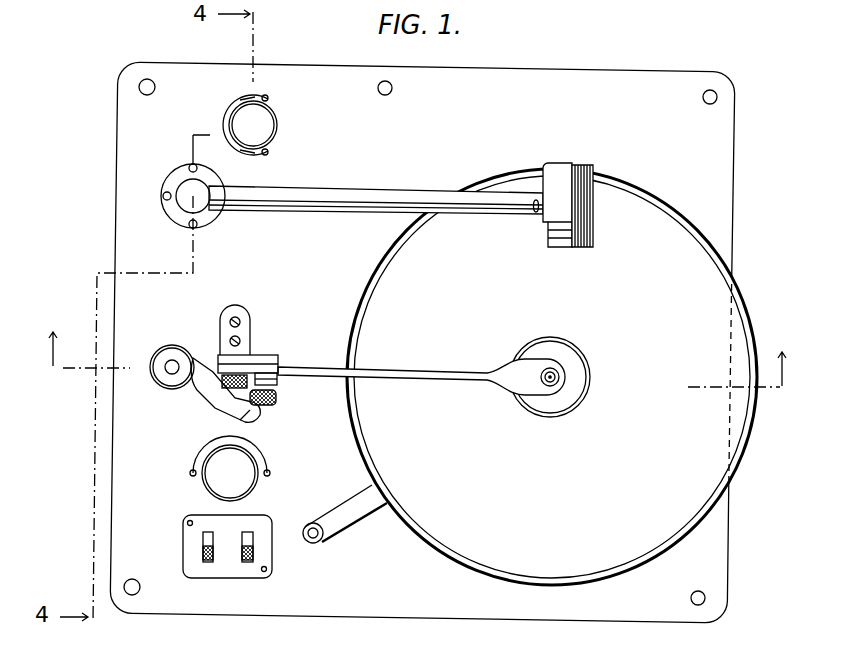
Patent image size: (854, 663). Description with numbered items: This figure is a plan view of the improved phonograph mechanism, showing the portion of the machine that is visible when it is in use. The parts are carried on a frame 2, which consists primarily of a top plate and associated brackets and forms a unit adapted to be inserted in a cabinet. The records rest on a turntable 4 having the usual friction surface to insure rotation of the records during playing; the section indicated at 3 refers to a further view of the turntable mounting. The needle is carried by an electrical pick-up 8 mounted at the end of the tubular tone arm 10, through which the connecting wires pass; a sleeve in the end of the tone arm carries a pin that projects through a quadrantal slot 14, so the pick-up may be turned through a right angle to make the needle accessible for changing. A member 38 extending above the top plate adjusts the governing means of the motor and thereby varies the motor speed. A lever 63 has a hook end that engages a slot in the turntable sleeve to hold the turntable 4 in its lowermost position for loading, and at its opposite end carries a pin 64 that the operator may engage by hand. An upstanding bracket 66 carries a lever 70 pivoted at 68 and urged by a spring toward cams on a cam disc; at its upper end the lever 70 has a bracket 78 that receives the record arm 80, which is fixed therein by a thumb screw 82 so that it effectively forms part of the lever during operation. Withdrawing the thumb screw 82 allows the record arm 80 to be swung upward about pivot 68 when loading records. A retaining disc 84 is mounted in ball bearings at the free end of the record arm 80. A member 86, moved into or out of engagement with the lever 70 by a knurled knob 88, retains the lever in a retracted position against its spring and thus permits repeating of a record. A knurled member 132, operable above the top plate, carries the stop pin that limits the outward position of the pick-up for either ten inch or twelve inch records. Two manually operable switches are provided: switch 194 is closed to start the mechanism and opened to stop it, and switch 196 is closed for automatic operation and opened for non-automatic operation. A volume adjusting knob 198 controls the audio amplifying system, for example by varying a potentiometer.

The frame 2 is at (727, 177).
The section line 3- 3 is at (415, 375).
The turntable 4 is at (700, 285).
The pick-up 8 is at (567, 167).
The tone arm 10 is at (381, 191).
The quadrantal slot 14 is at (536, 212).
The member 38 is at (393, 88).
The lever 63 is at (347, 522).
The pin 64 is at (313, 524).
The upstanding bracket 66 is at (238, 308).
The pivot 68 is at (200, 387).
The lever 70 is at (247, 364).
The bracket 78 is at (280, 385).
The record arm 80 is at (400, 370).
The thumb screw 82 is at (278, 405).
The retaining disc 84 is at (570, 355).
The member 86 is at (210, 410).
The knurled knob 88 is at (163, 350).
The knurled member 132 is at (272, 123).
The switch 194 is at (255, 547).
The switch 196 is at (210, 547).
The volume adjusting knob 198 is at (215, 480).